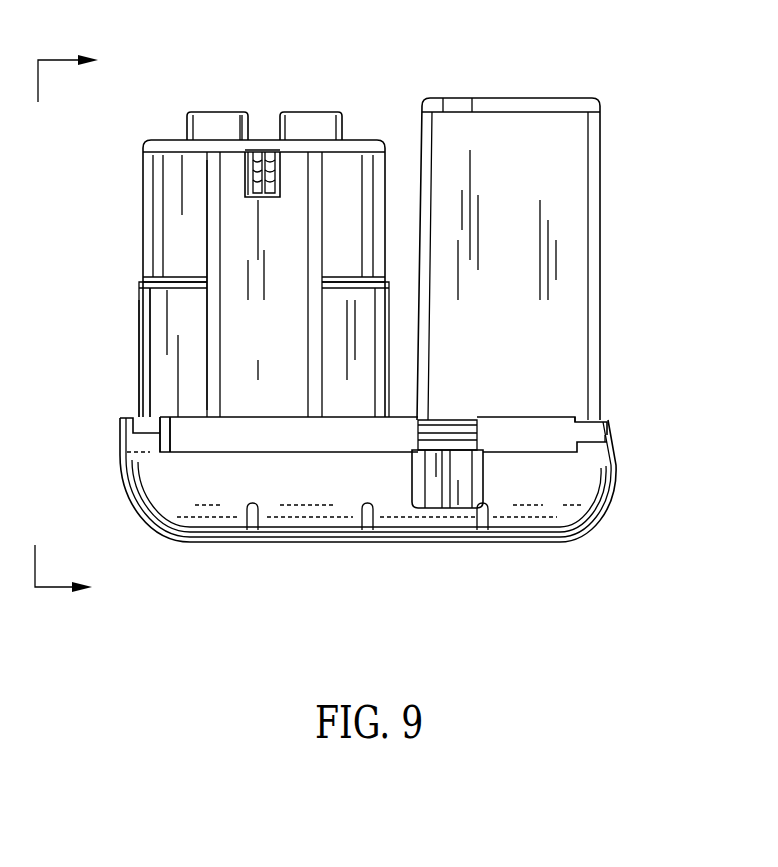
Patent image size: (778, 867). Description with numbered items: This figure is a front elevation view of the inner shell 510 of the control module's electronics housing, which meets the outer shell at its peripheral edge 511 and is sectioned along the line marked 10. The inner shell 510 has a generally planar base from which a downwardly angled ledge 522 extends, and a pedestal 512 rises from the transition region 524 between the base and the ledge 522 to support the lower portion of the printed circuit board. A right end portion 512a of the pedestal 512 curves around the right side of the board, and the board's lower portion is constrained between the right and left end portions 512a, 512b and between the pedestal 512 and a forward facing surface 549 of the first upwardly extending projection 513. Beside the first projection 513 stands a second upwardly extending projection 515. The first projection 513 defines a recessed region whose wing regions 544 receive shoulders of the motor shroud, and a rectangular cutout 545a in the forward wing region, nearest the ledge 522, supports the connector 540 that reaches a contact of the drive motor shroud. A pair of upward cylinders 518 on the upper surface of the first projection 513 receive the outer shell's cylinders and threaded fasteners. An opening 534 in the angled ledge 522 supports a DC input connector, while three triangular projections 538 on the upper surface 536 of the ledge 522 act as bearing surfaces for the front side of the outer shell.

The section line 10- 10 is at (82, 326).
The inner shell 510 is at (620, 77).
The peripheral edge 511 is at (537, 541).
The pedestal 512 is at (225, 437).
The right end portion 512a is at (576, 417).
The left end portion 512b is at (165, 417).
The first upwardly extending projection 513 is at (170, 243).
The second upwardly extending projection 515 is at (573, 245).
The upward cylinders 518 is at (202, 112).
The downwardly angled ledge 522 is at (292, 507).
The transition region 524 is at (120, 440).
The opening 534 is at (455, 424).
The upper surface 536 is at (398, 507).
The triangular projections 538 is at (250, 541).
The connector 540 is at (243, 160).
The wing regions 544 is at (242, 247).
The rectangular cutout 545a is at (262, 138).
The forward facing surface 549 is at (242, 337).